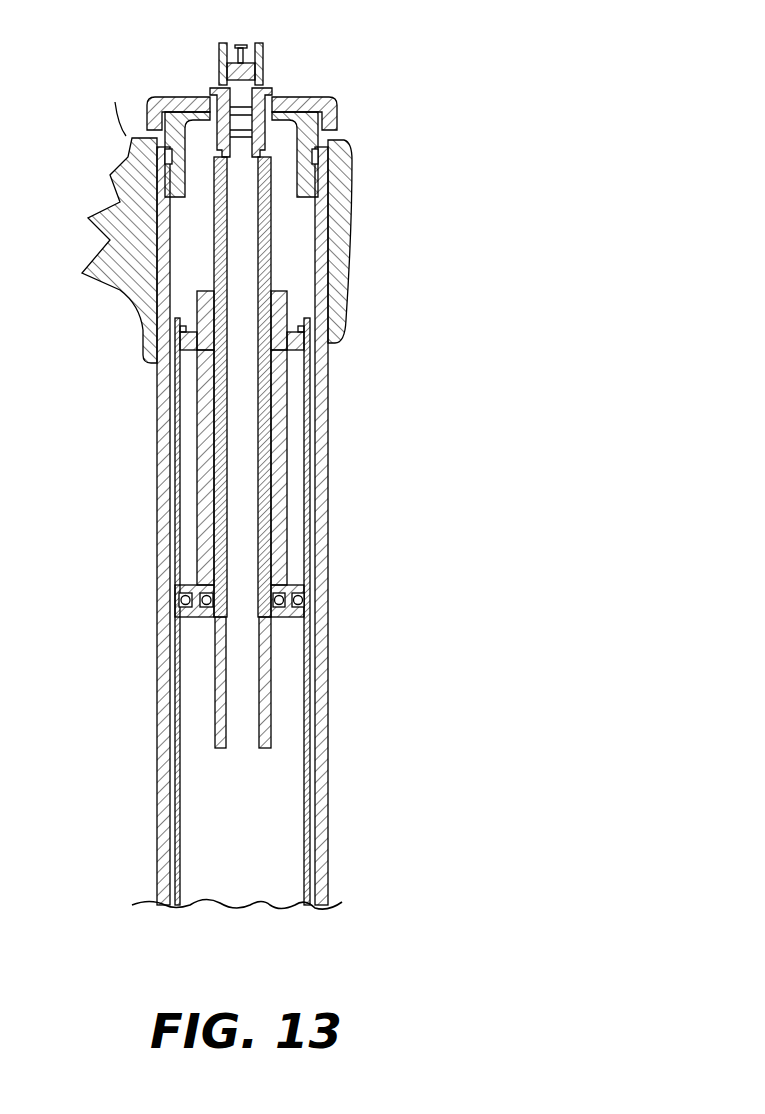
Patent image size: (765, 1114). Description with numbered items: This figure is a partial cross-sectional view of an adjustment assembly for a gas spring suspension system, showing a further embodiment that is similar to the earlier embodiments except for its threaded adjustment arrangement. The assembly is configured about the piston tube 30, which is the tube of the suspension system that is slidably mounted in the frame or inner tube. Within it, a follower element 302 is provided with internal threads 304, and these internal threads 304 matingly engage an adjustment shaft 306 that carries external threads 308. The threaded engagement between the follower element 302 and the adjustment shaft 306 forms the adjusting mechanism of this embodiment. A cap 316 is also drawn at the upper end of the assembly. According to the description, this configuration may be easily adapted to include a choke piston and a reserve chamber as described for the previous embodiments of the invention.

The cap 316 is at (322, 93).
The external threads 308 is at (268, 252).
The internal threads 304 is at (268, 305).
The follower element 302 is at (278, 502).
The piston tube 30 is at (307, 648).
The adjustment shaft 306 is at (266, 709).